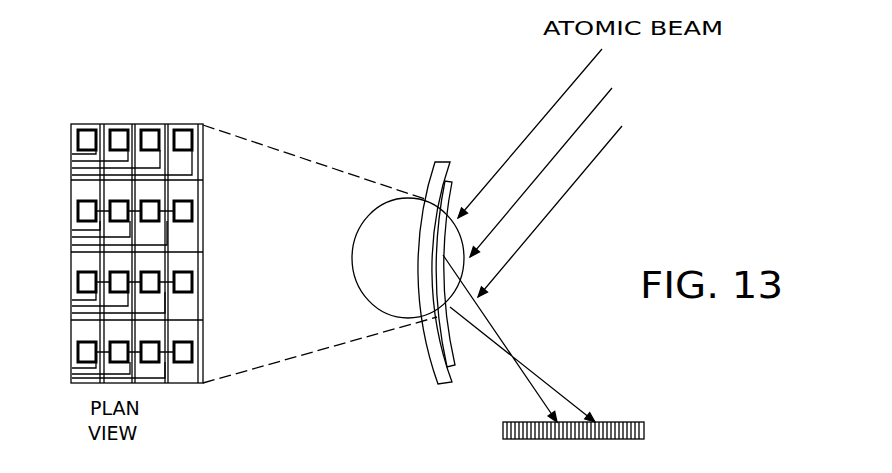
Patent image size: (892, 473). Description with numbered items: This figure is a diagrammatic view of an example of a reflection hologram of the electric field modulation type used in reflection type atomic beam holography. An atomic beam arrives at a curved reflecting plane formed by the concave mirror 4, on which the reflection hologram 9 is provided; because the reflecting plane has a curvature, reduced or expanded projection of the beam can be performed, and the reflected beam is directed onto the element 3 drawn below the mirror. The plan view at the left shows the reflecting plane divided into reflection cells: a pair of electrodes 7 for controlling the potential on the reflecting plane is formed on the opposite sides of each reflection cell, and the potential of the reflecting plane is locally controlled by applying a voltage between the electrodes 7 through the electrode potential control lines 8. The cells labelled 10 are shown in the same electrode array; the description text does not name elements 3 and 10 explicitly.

The substrate 3 is at (645, 415).
The concave mirror 4 is at (423, 175).
The electrodes 7 is at (90, 202).
The electrode potential control lines 8 is at (80, 252).
The reflection hologram 9 is at (452, 181).
The electrode aperture 10 is at (88, 138).